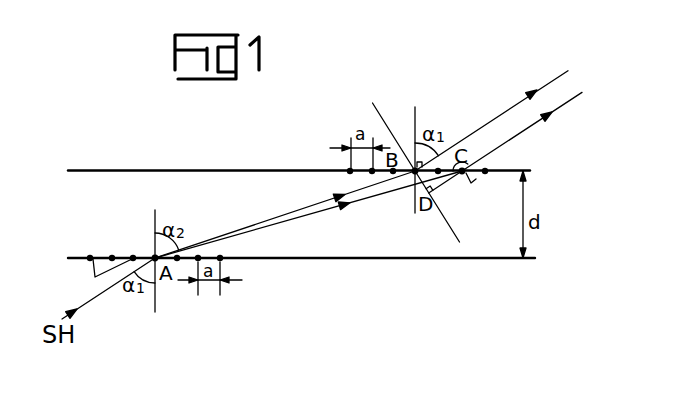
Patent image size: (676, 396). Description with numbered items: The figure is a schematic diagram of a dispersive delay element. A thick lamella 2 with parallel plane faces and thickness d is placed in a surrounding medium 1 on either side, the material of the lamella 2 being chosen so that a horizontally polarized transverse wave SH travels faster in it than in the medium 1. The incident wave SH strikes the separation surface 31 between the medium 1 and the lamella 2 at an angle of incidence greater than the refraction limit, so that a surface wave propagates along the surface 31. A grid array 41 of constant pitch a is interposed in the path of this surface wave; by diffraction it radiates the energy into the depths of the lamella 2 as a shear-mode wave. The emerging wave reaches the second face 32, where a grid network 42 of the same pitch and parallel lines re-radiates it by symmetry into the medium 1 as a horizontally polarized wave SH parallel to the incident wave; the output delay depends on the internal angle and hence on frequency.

The medium 1 is at (149, 131).
The lamella 2 is at (120, 208).
The separation surface 31 is at (69, 258).
The second face 32 is at (69, 170).
The grid array 41 is at (97, 275).
The grid network 42 is at (479, 187).